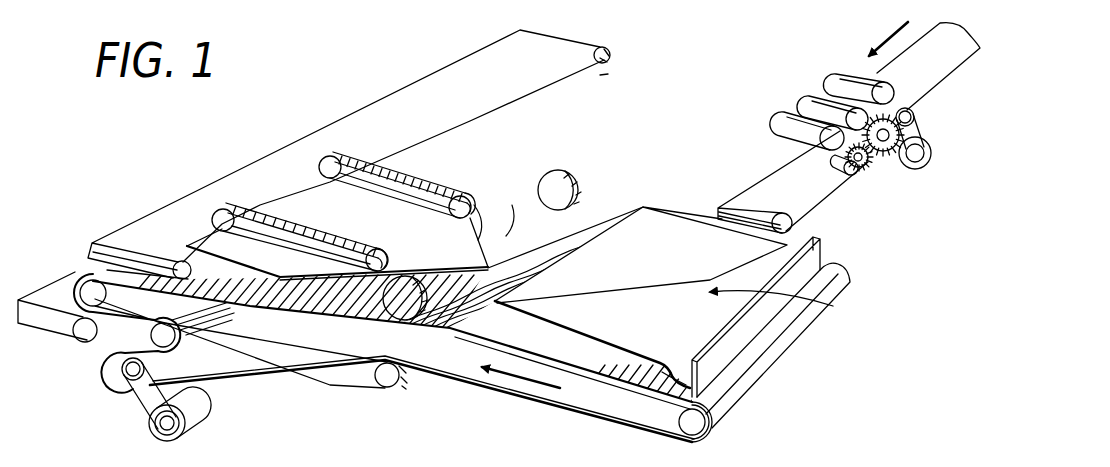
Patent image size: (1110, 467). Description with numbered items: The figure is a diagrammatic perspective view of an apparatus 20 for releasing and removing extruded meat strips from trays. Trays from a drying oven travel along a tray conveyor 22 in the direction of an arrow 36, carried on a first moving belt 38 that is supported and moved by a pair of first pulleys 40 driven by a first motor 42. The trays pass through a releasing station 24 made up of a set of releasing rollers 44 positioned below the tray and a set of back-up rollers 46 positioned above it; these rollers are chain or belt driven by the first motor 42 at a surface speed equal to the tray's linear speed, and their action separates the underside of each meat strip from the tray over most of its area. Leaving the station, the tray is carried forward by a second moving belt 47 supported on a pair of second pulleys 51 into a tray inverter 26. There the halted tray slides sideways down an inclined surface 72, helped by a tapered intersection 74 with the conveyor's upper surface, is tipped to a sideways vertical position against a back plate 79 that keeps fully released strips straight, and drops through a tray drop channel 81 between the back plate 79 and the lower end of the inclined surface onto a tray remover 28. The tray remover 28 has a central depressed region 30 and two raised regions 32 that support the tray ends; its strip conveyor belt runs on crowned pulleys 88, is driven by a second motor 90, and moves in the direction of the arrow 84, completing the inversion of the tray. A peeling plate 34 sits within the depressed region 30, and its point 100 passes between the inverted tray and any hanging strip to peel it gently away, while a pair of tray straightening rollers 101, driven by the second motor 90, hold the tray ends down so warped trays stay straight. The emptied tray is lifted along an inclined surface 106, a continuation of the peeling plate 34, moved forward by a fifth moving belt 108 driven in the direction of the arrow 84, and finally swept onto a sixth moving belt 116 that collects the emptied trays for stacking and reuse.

The apparatus 20 is at (590, 160).
The tray conveyor 22 is at (932, 101).
The releasing station 24 is at (818, 126).
The tray inverter 26 is at (787, 308).
The tray remover 28 is at (461, 390).
The central depressed region 30 is at (508, 235).
The raised regions 32 is at (592, 215).
The peeling plate 34 is at (478, 210).
The arrow 36 is at (883, 28).
The first moving belt 38 is at (873, 72).
The first pulleys 40 is at (914, 117).
The first motor 42 is at (881, 165).
The releasing rollers 44 is at (853, 180).
The back-up rollers 46 is at (782, 122).
The second moving belt 47 is at (753, 177).
The second pulleys 51 is at (792, 223).
The inclined surface 72 is at (632, 356).
The tapered intersection 74 is at (620, 300).
The back plate 79 is at (822, 250).
The tray drop channel 81 is at (672, 387).
The arrow 84 is at (542, 380).
The crowned pulleys 88 is at (686, 430).
The second motor 90 is at (190, 430).
The point 100 is at (470, 250).
The tray straightening rollers 101 is at (552, 171).
The inclined surface 106 is at (304, 200).
The fifth moving belt 108 is at (369, 154).
The sixth moving belt 116 is at (198, 186).